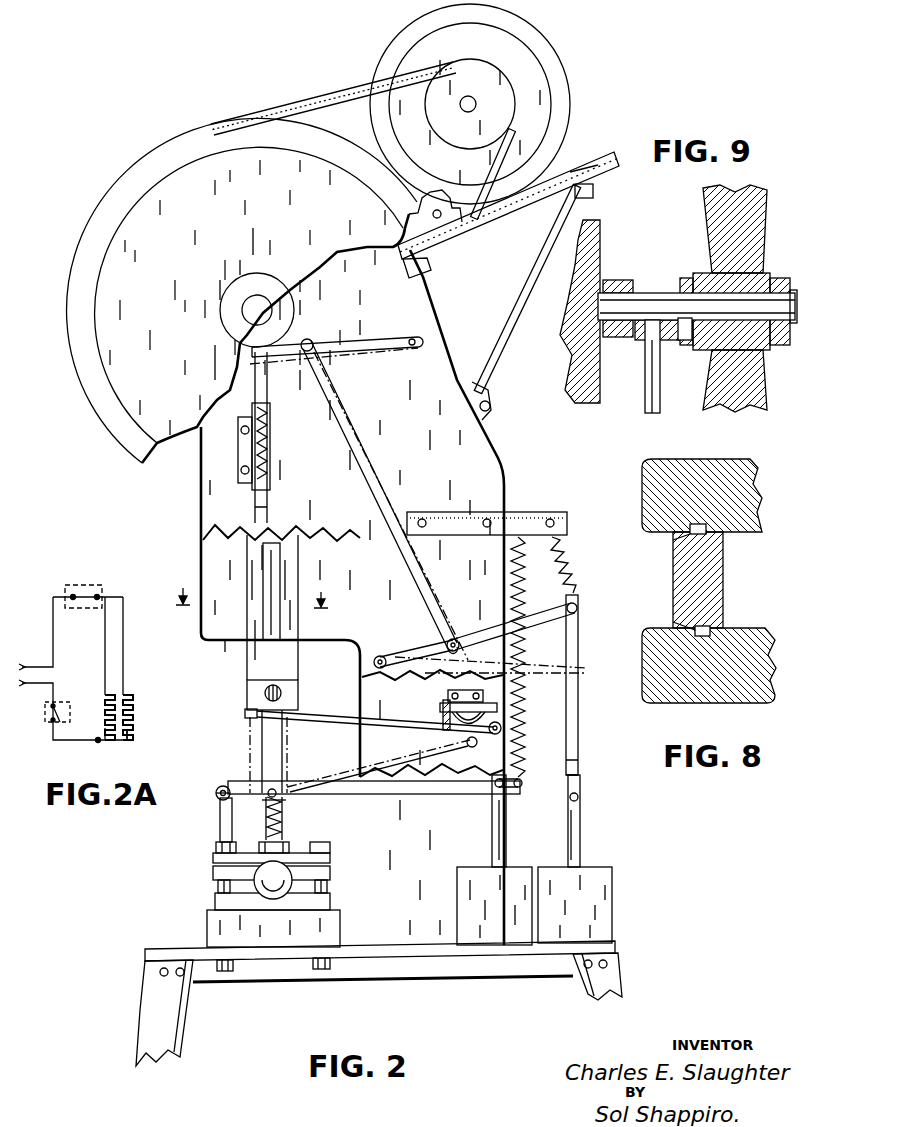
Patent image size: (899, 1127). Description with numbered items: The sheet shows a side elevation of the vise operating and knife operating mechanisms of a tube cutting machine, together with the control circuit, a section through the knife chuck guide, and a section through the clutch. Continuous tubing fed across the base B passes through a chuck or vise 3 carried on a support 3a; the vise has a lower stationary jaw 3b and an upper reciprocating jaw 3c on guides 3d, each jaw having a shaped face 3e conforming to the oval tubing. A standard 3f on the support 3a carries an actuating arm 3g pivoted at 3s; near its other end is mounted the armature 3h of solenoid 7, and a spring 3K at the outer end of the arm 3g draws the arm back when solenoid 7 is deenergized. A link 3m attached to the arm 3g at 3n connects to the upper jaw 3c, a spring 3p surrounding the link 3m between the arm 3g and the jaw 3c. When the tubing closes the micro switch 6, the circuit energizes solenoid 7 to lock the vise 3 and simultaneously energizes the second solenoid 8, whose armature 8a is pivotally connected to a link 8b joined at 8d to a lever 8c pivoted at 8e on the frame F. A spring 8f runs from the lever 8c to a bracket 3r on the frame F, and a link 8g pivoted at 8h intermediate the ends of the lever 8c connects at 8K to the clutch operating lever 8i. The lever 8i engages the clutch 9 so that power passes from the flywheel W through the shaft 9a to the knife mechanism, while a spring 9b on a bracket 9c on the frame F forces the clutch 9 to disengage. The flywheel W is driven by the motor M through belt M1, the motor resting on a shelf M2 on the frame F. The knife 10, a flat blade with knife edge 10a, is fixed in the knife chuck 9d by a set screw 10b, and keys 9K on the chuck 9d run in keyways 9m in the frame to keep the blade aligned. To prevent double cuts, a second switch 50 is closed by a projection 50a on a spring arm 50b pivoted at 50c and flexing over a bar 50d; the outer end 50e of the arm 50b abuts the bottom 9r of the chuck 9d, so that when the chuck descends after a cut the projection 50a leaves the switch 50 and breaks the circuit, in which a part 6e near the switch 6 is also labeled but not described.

In FIG. 2, the flywheel W is at (150, 200).
In FIG. 9, the flywheel W is at (762, 252).
In FIG. 2, the motor M is at (565, 60).
In FIG. 2, the belt M1 is at (330, 95).
In FIG. 2, the shelf M2 is at (612, 158).
In FIG. 2, the frame F is at (504, 464).
In FIG. 8, the frame F is at (760, 488).
In FIG. 2, the base B is at (622, 947).
In FIG. 2, the clutch 9 is at (249, 237).
In FIG. 9, the clutch 9 is at (661, 345).
In FIG. 9, the shaft 9a is at (651, 297).
In FIG. 2, the spring 9b is at (270, 432).
In FIG. 2, the bracket 9c is at (239, 456).
In FIG. 2, the knife chuck 9d is at (293, 646).
In FIG. 8, the knife chuck 9d is at (724, 575).
In FIG. 2, the keys 9K is at (266, 600).
In FIG. 8, the keys 9K is at (673, 538).
In FIG. 8, the keyways 9m is at (698, 524).
In FIG. 2, the bottom of knife chuck 9r is at (246, 714).
In FIG. 2, the second solenoid 8 is at (632, 895).
In FIG. 2A, the second solenoid 8 is at (137, 712).
In FIG. 2, the armature 8a is at (581, 832).
In FIG. 2, the link 8b is at (580, 764).
In FIG. 2, the lever 8c is at (489, 636).
In FIG. 2, the pivot connection 8d is at (580, 606).
In FIG. 2, the pivot mounting 8e is at (382, 656).
In FIG. 2, the spring 8f is at (570, 552).
In FIG. 2, the link 8g is at (380, 492).
In FIG. 9, the link 8g is at (646, 400).
In FIG. 2, the pivot 8h is at (458, 638).
In FIG. 2, the clutch operating lever 8i is at (365, 346).
In FIG. 2, the pivot connection 8K is at (310, 340).
In FIG. 2, the solenoid 7 is at (452, 906).
In FIG. 2A, the solenoid 7 is at (110, 712).
In FIG. 2A, the micro switch 6 is at (46, 724).
In FIG. 2A, the conductor 6e is at (75, 741).
In FIG. 2, the second switch 50 is at (437, 700).
In FIG. 2A, the second switch 50 is at (100, 585).
In FIG. 2, the projection 50a is at (444, 714).
In FIG. 2, the spring arm 50b is at (346, 736).
In FIG. 2, the pivot 50c is at (502, 731).
In FIG. 2, the bar 50d is at (436, 748).
In FIG. 2, the outer end of arm 50e is at (249, 701).
In FIG. 2, the knife 10 is at (256, 752).
In FIG. 2, the knife edge 10a is at (288, 840).
In FIG. 2, the set screw 10b is at (284, 696).
In FIG. 2, the chuck or vise 3 is at (205, 870).
In FIG. 2, the support 3a is at (341, 927).
In FIG. 2, the lower stationary jaw 3b is at (331, 900).
In FIG. 2, the upper reciprocating jaw 3c is at (331, 858).
In FIG. 2, the guides 3d is at (217, 888).
In FIG. 2, the shaped face 3e is at (273, 896).
In FIG. 2, the standard 3f is at (220, 832).
In FIG. 2, the actuating arm 3g is at (405, 796).
In FIG. 2, the armature 3h is at (494, 822).
In FIG. 2, the spring 3K is at (526, 711).
In FIG. 2, the link 3m is at (265, 822).
In FIG. 2, the attachment point 3n is at (236, 776).
In FIG. 2, the spring 3p is at (285, 812).
In FIG. 2, the bracket 3r is at (545, 513).
In FIG. 2, the pivot 3s is at (218, 795).